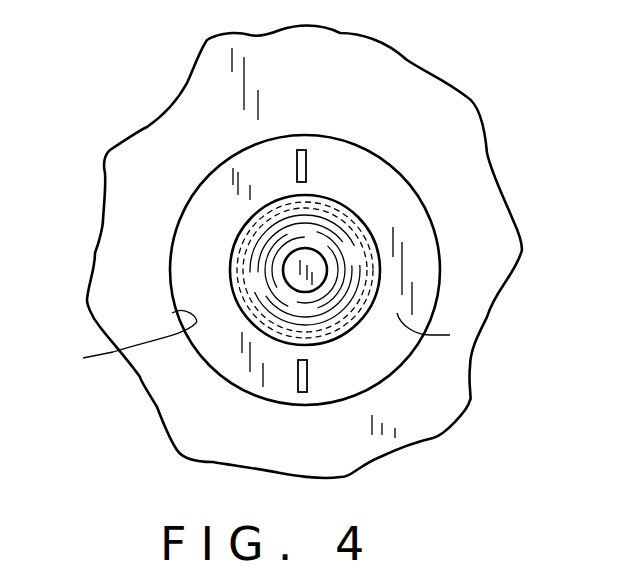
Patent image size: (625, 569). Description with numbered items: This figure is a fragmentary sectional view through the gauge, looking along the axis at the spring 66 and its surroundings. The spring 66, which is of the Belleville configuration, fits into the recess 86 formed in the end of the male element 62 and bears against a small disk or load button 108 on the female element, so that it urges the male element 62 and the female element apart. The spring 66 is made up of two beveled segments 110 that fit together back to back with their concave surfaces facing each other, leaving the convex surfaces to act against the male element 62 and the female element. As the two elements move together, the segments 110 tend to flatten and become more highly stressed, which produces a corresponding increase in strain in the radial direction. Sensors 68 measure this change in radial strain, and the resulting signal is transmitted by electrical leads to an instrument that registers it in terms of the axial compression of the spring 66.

The male element 62 is at (145, 262).
The spring 66 is at (453, 220).
The sensors 68 is at (293, 168).
The recess 86 is at (121, 341).
The load button 108 is at (343, 237).
The beveled segments 110 is at (450, 335).